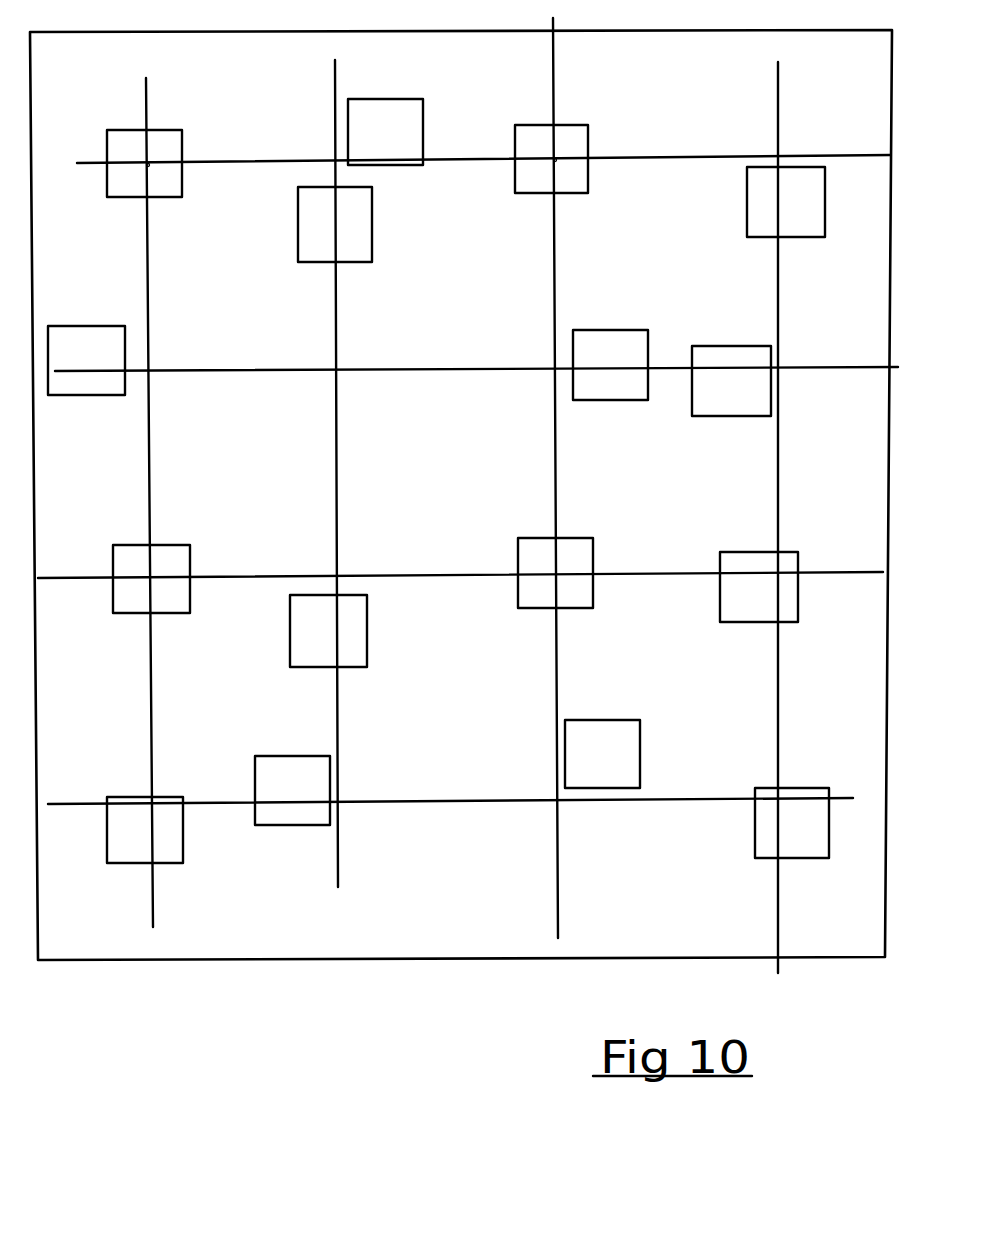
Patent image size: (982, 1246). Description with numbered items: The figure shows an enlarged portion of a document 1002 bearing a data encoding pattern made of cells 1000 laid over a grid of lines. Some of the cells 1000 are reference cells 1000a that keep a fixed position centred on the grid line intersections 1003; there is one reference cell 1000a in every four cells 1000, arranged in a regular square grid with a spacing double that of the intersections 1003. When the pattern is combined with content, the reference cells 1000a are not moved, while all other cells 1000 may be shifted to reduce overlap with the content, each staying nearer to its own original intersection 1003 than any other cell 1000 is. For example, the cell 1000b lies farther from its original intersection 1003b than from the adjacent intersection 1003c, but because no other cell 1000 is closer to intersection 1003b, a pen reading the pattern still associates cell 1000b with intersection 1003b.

The cell 1000 is at (395, 97).
The reference cell 1000a is at (165, 127).
The cell 1000b is at (373, 233).
The document 1002 is at (360, 940).
The grid line intersection 1003 is at (148, 167).
The original intersection 1003b is at (338, 375).
The adjacent intersection 1003c is at (335, 160).